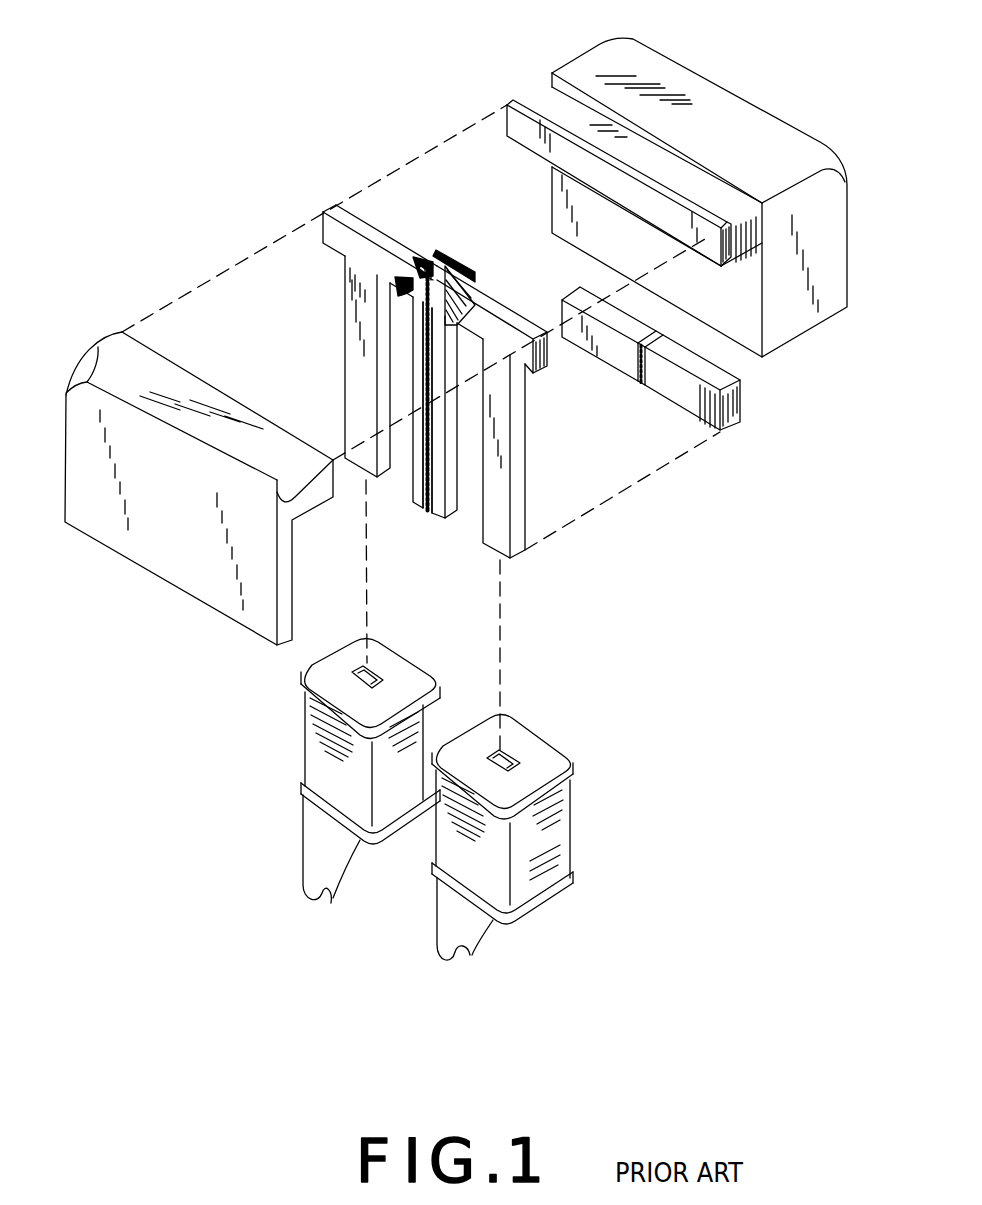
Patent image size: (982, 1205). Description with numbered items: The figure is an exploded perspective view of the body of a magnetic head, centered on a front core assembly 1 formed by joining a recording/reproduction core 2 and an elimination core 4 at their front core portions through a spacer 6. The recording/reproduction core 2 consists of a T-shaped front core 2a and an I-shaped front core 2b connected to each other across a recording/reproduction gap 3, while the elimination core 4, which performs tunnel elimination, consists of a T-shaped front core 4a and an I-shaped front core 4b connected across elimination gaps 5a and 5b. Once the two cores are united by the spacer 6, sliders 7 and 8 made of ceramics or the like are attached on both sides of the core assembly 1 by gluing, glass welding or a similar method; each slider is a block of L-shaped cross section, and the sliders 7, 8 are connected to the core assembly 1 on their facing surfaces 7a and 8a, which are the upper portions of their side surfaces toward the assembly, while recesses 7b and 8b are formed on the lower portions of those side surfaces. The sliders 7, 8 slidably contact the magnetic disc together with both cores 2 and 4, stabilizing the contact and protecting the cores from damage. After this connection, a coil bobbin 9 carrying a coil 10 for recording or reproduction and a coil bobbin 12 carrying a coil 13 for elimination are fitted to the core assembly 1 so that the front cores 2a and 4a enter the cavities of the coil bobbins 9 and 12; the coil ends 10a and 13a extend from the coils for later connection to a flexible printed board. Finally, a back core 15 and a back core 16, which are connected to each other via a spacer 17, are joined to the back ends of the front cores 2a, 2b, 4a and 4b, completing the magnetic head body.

The front core assembly 1 is at (477, 558).
The recording/reproduction core 2 is at (493, 300).
The T-shaped front core 2a is at (515, 487).
The I-shaped front core 2b is at (441, 519).
The recording/reproduction gap 3 is at (459, 283).
The elimination core 4 is at (322, 208).
The T-shaped front core 4a is at (353, 363).
The I-shaped front core 4b is at (419, 505).
The elimination gap 5a is at (412, 260).
The elimination gap 5b is at (433, 265).
The spacer 6 is at (429, 512).
The slider 7 is at (218, 592).
The facing surface 7a is at (194, 370).
The recess 7b is at (292, 592).
The slider 8 is at (832, 308).
The facing surface 8a is at (509, 124).
The recess 8b is at (752, 342).
The coil bobbin 9 is at (573, 877).
The coil 10 is at (563, 811).
The coil ends 10a is at (455, 950).
The coil bobbin 12 is at (300, 785).
The coil 13 is at (306, 735).
The coil ends 13a is at (316, 895).
The back core 15 is at (678, 395).
The back core 16 is at (607, 352).
The spacer 17 is at (642, 380).